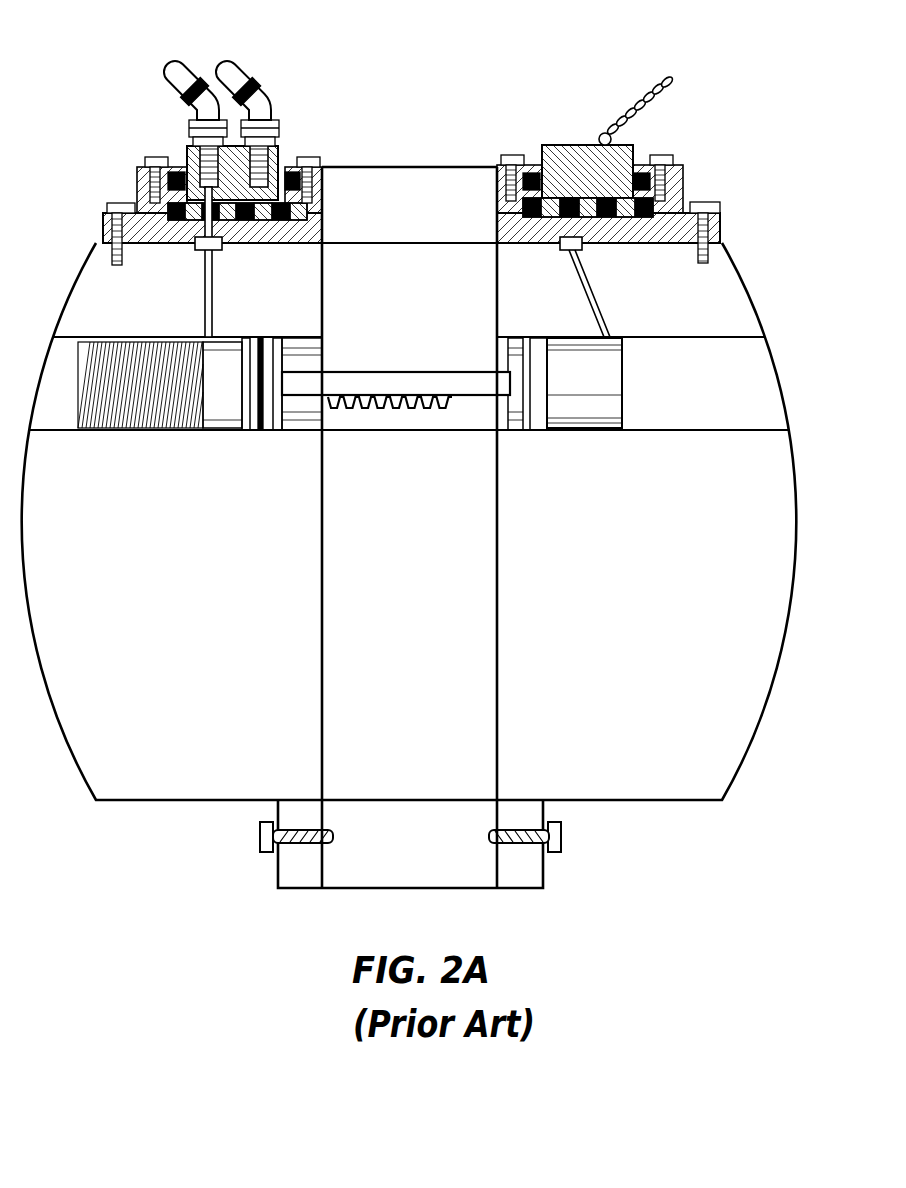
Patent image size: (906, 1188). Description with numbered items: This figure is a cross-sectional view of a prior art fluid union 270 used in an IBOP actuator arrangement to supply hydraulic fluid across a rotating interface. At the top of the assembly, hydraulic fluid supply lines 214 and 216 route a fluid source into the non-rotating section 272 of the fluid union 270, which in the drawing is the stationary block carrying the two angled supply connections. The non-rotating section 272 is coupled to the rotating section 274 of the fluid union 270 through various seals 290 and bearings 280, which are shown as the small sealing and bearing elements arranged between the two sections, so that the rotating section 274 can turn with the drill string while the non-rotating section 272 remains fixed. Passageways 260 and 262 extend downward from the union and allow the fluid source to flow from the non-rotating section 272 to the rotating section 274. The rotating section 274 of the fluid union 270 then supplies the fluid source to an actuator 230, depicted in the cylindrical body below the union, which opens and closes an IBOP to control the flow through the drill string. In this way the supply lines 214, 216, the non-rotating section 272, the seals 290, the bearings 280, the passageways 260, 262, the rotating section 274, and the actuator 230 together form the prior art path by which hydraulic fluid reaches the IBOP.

The hydraulic fluid supply line 214 is at (184, 80).
The hydraulic fluid supply line 216 is at (238, 72).
The actuator 230 is at (185, 428).
The passageway 260 is at (212, 312).
The passageway 262 is at (606, 327).
The fluid union 270 is at (292, 128).
The non-rotating section 272 is at (280, 153).
The rotating section 274 is at (672, 190).
The bearing 280 is at (168, 208).
The seal 290 is at (195, 245).